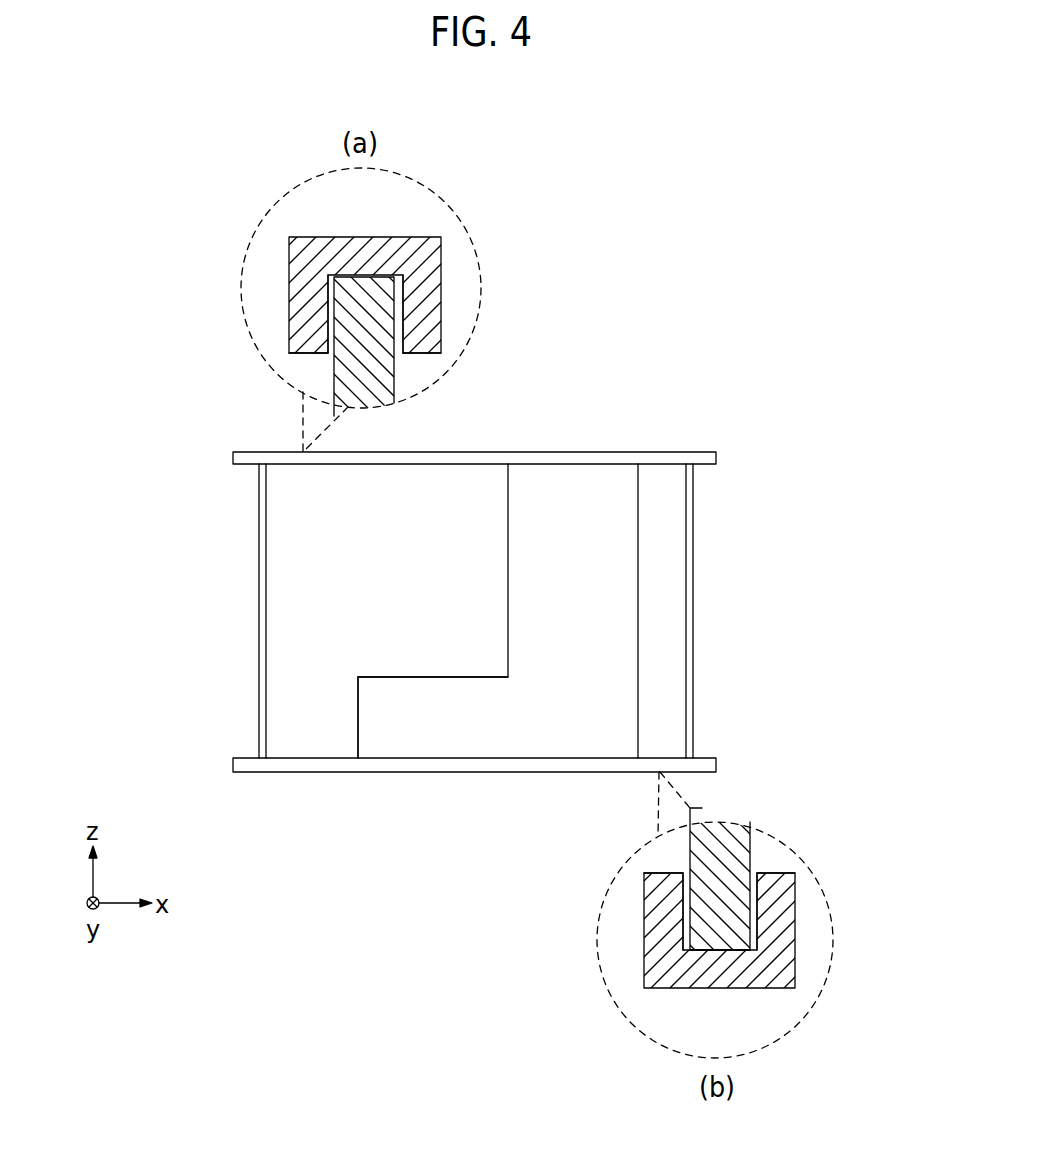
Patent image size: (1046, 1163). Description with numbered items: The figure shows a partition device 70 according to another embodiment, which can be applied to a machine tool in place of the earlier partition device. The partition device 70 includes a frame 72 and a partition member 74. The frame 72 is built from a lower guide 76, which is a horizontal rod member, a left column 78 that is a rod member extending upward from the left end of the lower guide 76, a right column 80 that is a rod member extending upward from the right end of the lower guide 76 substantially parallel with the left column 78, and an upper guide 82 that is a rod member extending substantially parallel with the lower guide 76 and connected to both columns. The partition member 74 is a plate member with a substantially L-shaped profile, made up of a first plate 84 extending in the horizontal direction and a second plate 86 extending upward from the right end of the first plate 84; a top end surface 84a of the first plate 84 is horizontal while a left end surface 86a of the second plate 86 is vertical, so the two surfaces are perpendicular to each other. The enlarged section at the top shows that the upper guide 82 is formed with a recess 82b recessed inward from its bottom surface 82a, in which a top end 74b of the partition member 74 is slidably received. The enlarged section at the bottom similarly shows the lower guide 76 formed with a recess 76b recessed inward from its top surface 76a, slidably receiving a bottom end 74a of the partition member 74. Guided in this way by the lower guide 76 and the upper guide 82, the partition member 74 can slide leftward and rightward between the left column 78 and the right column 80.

The partition device 70 is at (774, 178).
The frame 72 is at (704, 601).
The partition member 74 is at (345, 378).
The bottom end of partition member 74a is at (703, 950).
The top end of partition member 74b is at (376, 278).
The lower guide 76 is at (426, 769).
The top surface of lower guide 76a is at (287, 758).
The recess of lower guide 76b is at (684, 905).
The left column 78 is at (259, 620).
The right column 80 is at (689, 529).
The upper guide 82 is at (300, 267).
The bottom surface of upper guide 82a is at (423, 354).
The recess of upper guide 82b is at (398, 303).
The first plate 84 is at (365, 717).
The top end surface of first plate 84a is at (373, 677).
The second plate 86 is at (611, 480).
The left end surface of second plate 86a is at (508, 567).